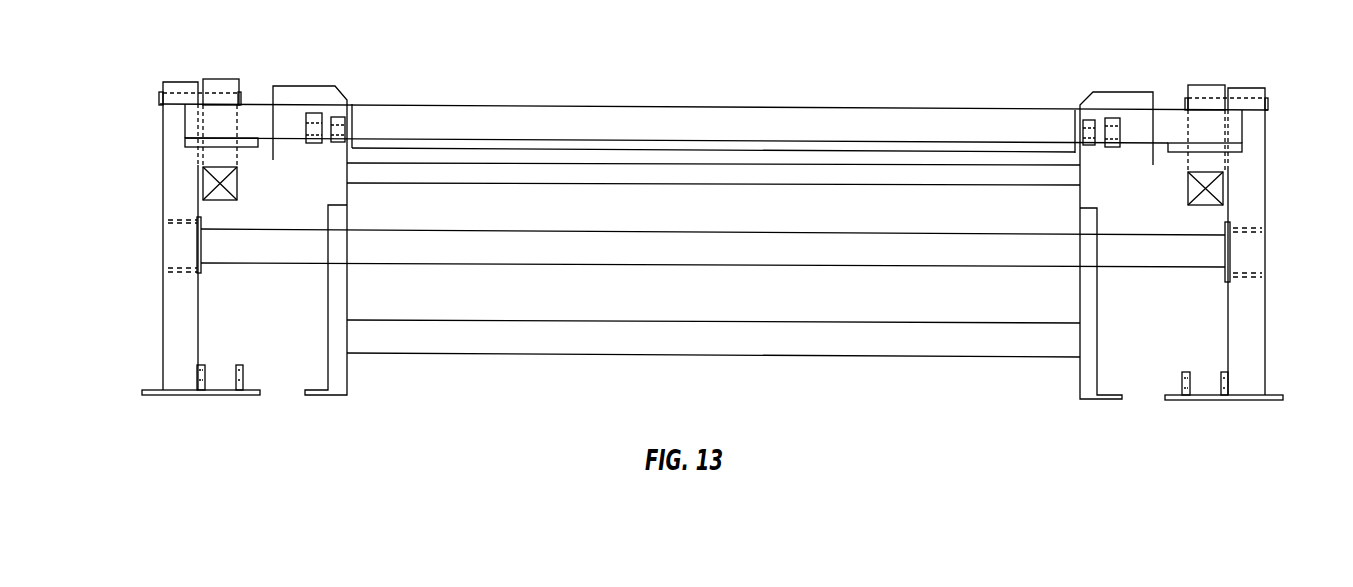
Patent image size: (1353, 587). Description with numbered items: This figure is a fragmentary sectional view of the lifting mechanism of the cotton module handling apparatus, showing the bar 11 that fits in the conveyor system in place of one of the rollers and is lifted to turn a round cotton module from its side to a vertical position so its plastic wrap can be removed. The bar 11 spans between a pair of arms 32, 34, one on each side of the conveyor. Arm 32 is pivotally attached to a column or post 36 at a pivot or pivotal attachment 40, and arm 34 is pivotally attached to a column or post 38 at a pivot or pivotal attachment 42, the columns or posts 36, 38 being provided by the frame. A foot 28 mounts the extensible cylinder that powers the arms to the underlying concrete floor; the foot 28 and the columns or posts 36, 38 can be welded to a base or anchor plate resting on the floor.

The bar 11 is at (436, 115).
The foot 28 is at (1192, 370).
The arm 32 is at (1207, 85).
The arm 34 is at (232, 82).
The column or post 36 is at (1255, 328).
The column or post 38 is at (172, 323).
The pivot or pivotal attachment 40 is at (1268, 110).
The pivot or pivotal attachment 42 is at (159, 98).